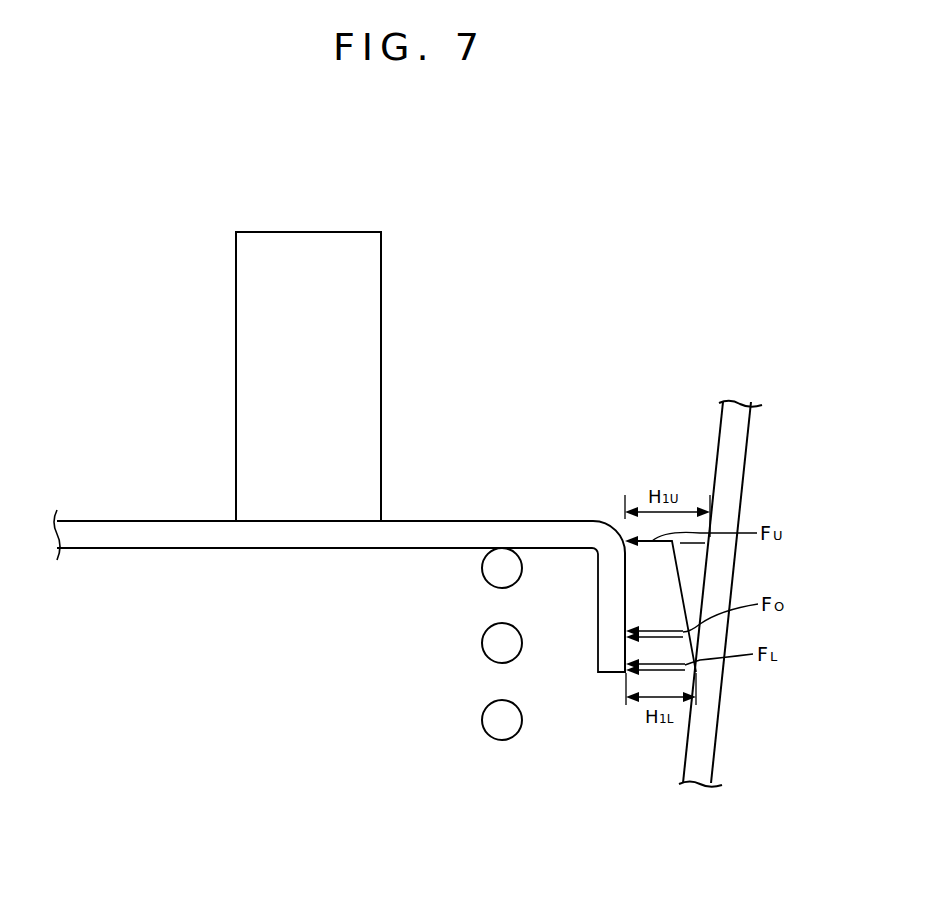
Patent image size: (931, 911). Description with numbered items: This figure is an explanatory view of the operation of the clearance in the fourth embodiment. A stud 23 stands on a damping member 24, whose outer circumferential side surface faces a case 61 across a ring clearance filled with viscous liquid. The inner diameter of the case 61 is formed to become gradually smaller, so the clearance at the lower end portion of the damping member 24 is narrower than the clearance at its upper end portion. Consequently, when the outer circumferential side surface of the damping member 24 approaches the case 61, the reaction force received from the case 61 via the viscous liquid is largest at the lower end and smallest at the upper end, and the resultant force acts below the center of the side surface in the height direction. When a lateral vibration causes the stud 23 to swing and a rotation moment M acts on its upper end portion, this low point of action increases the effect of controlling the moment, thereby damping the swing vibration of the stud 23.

The stud 23 is at (381, 360).
The damping member 24 is at (469, 520).
The case 61 is at (745, 455).
The rotation moment M is at (218, 233).